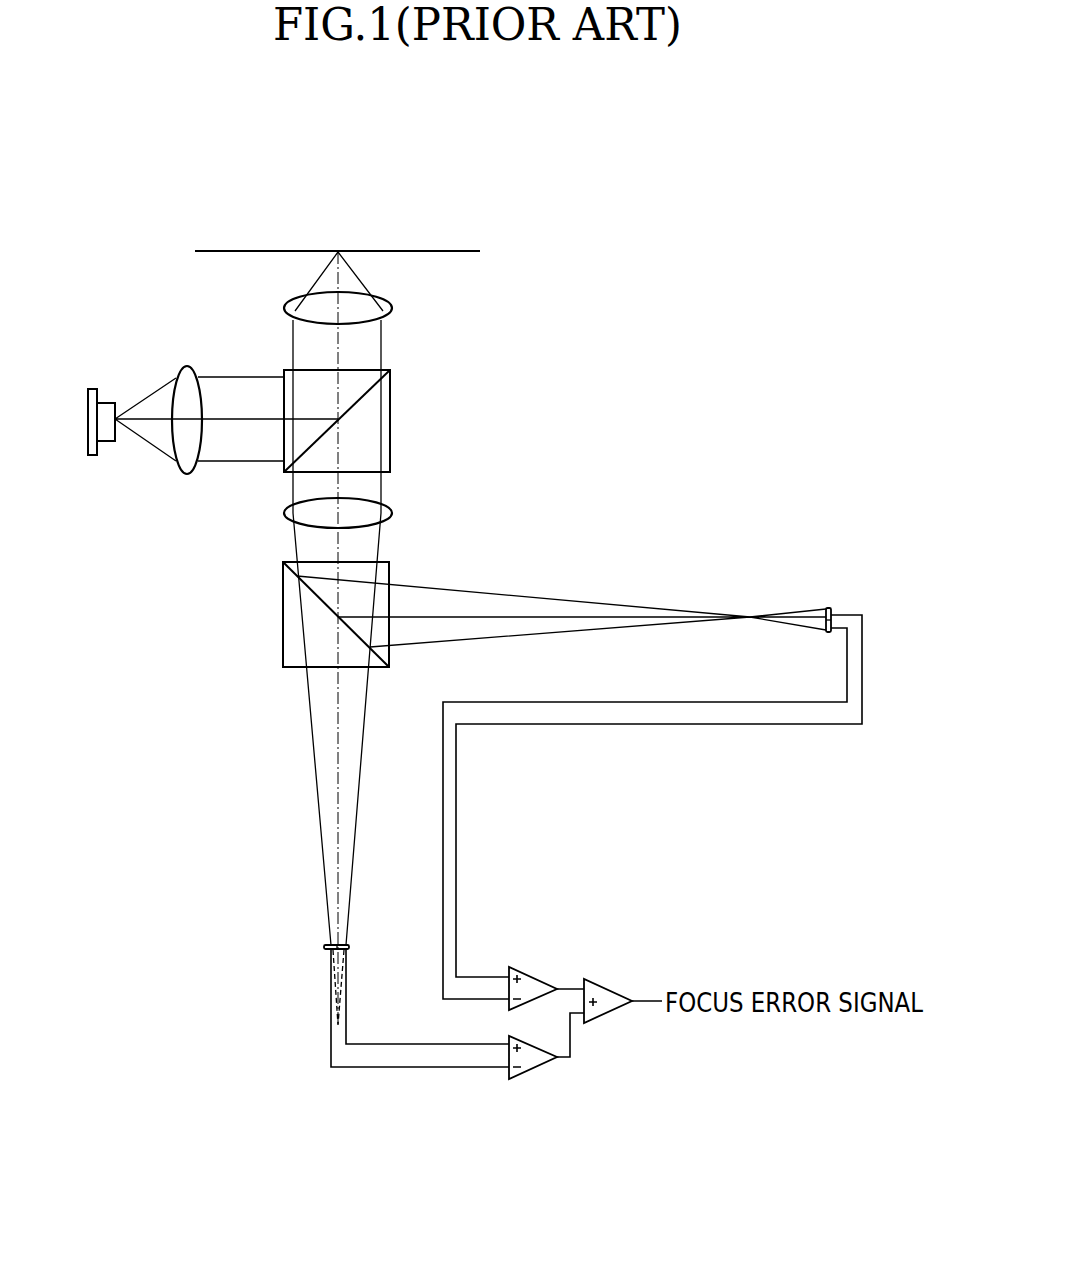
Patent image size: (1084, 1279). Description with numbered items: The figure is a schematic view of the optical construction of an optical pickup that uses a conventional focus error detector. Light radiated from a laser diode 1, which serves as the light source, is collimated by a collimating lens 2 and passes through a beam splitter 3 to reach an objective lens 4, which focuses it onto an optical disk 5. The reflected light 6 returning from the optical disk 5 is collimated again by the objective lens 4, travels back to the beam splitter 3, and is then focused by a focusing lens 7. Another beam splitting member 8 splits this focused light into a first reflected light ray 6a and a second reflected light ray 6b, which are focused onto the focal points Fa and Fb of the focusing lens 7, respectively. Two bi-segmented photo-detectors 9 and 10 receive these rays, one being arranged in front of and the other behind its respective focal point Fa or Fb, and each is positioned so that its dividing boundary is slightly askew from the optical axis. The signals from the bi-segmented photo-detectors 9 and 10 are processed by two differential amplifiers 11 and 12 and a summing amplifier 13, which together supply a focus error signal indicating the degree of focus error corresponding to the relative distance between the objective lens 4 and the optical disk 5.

The laser diode 1 is at (95, 458).
The collimating lens 2 is at (187, 477).
The beam splitter 3 is at (391, 417).
The objective lens 4 is at (390, 313).
The optical disk 5 is at (443, 250).
The reflected light 6 is at (383, 490).
The first reflected light ray 6a is at (316, 770).
The second reflected light ray 6b is at (571, 600).
The focusing lens 7 is at (391, 517).
The beam splitting member 8 is at (282, 621).
The bi-segmented photo-detector 9 is at (323, 947).
The bi-segmented photo-detector 10 is at (829, 606).
The differential amplifier 11 is at (531, 1072).
The differential amplifier 12 is at (529, 972).
The summing amplifier 13 is at (617, 992).
The focal point Fa is at (335, 1029).
The focal point Fb is at (748, 606).